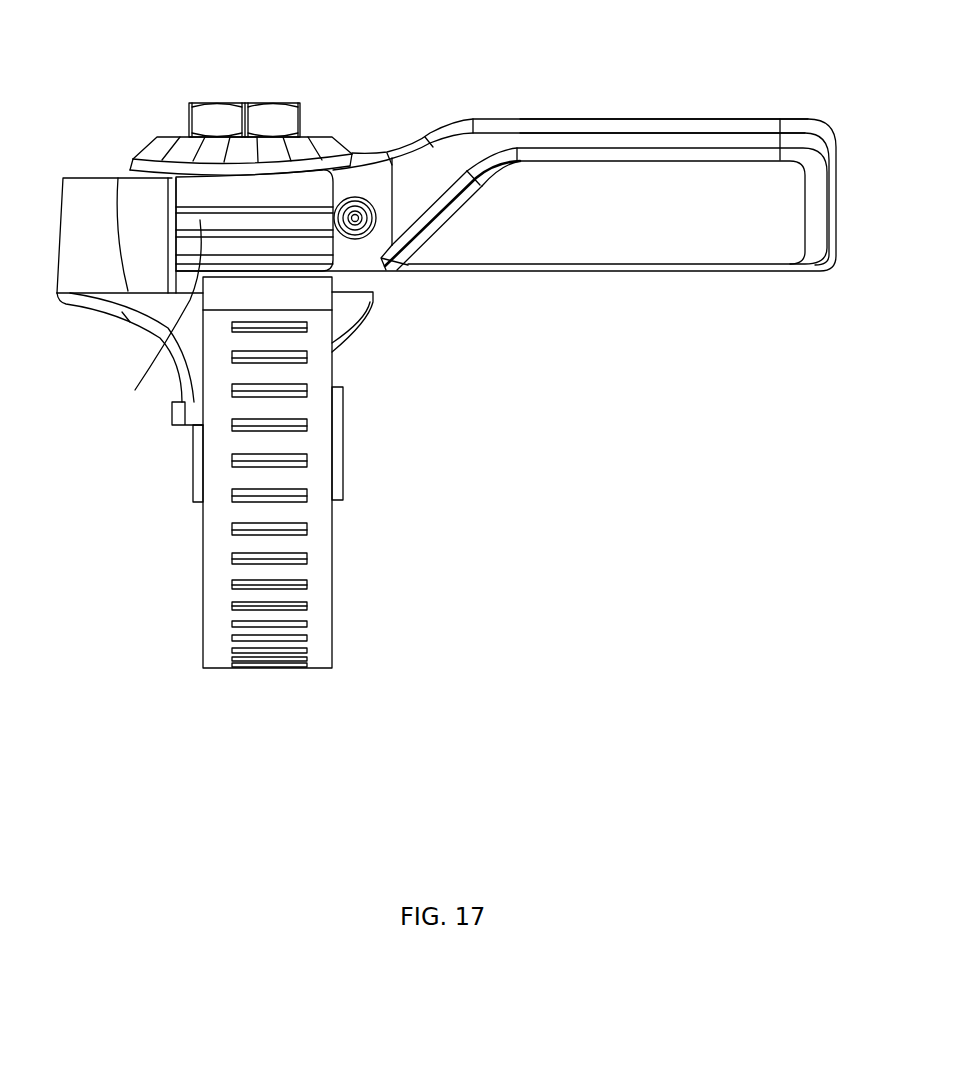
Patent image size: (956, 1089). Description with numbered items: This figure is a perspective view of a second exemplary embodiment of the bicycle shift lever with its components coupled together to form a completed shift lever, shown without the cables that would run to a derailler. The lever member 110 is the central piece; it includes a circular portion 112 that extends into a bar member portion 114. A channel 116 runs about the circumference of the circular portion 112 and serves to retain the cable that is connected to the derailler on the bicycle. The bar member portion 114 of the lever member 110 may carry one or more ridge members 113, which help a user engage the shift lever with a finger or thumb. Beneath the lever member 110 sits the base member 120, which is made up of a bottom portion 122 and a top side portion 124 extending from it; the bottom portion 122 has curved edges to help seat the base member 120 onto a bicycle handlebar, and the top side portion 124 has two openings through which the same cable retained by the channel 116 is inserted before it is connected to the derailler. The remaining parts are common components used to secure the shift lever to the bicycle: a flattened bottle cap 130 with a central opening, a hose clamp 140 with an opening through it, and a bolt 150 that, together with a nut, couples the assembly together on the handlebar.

The lever member 110 is at (476, 113).
The circular portion 112 is at (363, 190).
The ridge members 113 is at (416, 252).
The bar member portion 114 is at (658, 133).
The channel 116 is at (155, 323).
The base member 120 is at (120, 328).
The bottom portion 122 is at (193, 480).
The top side portion 124 is at (78, 198).
The flattened bottle cap 130 is at (318, 137).
The hose clamp 140 is at (308, 603).
The bolt 150 is at (216, 105).